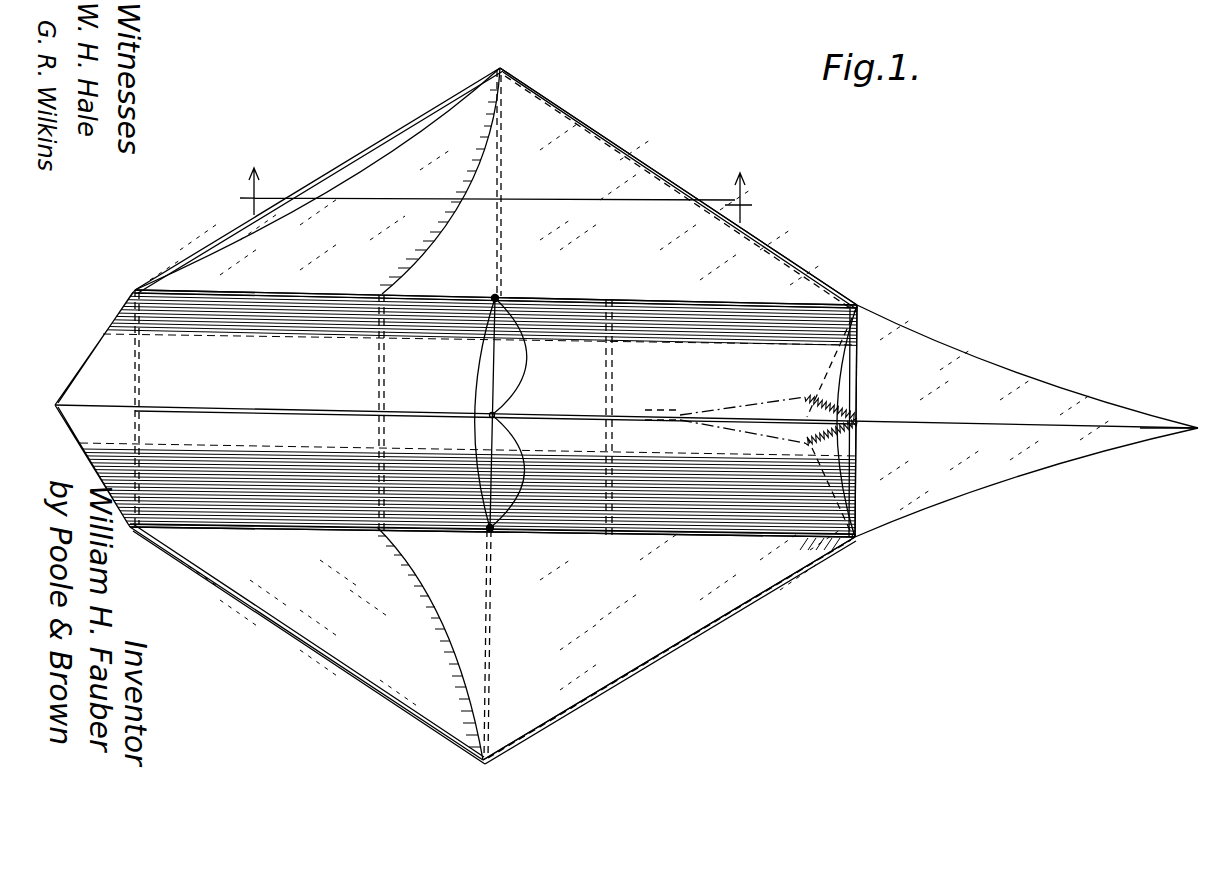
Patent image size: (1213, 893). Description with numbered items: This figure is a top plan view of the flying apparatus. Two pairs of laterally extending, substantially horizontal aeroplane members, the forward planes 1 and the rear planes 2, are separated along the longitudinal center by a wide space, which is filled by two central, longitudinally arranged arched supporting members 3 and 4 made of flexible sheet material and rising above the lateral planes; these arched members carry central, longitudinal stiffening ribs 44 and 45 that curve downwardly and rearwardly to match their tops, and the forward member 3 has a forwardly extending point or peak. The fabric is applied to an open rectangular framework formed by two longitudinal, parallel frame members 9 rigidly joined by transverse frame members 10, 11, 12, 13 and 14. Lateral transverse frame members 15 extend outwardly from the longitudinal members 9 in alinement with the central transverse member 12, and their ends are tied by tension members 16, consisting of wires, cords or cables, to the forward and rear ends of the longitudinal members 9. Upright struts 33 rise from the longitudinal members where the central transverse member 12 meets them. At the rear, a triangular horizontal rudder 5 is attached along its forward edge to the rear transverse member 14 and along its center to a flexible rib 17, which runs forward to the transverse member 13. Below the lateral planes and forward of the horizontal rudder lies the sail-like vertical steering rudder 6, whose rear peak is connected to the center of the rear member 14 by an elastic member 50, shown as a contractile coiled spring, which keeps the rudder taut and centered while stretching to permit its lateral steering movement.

The forward lateral supporting plane 1 is at (365, 182).
The rear lateral supporting plane 2 is at (638, 183).
The forward central arched supporting member 3 is at (120, 342).
The rear central arched supporting member 4 is at (725, 503).
The horizontal rudder 5 is at (974, 368).
The vertical steering rudder 6 is at (776, 382).
The longitudinal frame member 9 is at (300, 292).
The transverse frame member 10 is at (135, 368).
The transverse frame member 11 is at (378, 368).
The central transverse frame member 12 is at (492, 370).
The transverse frame member 13 is at (610, 368).
The rear transverse frame member 14 is at (862, 330).
The lateral transverse frame member 15 is at (500, 68).
The tension member 16 is at (355, 145).
The flexible rib 17 is at (1112, 432).
The upright strut 33 is at (498, 297).
The stiffening rib 44 is at (232, 408).
The stiffening rib 45 is at (557, 412).
The elastic member 50 is at (840, 410).